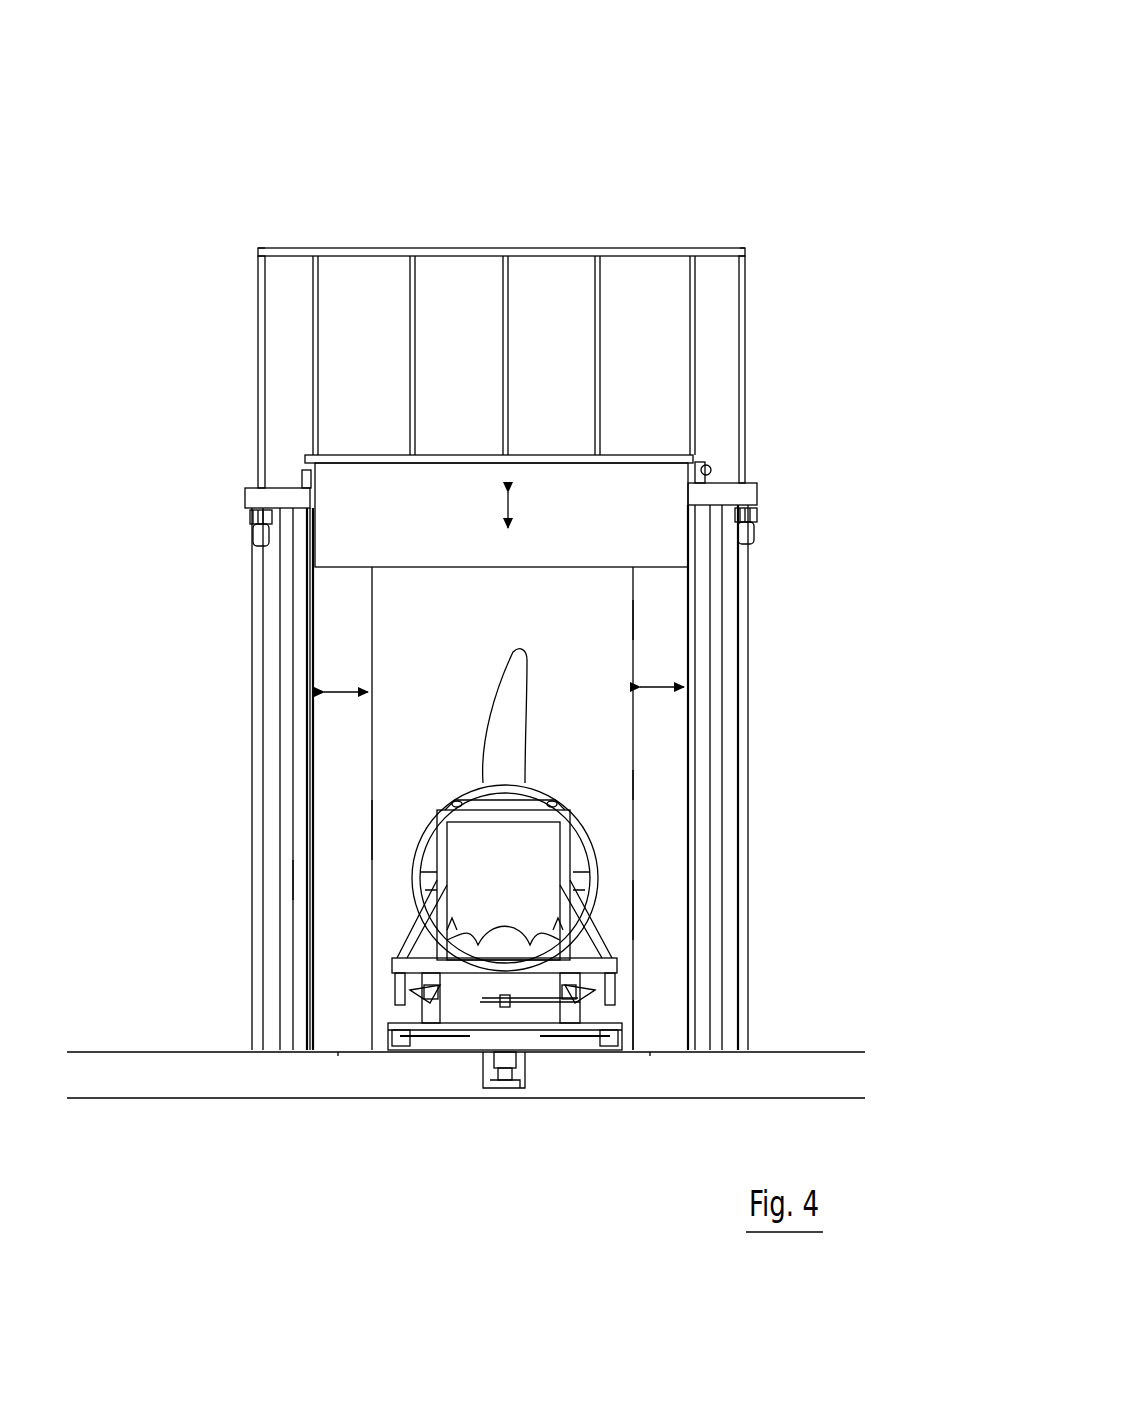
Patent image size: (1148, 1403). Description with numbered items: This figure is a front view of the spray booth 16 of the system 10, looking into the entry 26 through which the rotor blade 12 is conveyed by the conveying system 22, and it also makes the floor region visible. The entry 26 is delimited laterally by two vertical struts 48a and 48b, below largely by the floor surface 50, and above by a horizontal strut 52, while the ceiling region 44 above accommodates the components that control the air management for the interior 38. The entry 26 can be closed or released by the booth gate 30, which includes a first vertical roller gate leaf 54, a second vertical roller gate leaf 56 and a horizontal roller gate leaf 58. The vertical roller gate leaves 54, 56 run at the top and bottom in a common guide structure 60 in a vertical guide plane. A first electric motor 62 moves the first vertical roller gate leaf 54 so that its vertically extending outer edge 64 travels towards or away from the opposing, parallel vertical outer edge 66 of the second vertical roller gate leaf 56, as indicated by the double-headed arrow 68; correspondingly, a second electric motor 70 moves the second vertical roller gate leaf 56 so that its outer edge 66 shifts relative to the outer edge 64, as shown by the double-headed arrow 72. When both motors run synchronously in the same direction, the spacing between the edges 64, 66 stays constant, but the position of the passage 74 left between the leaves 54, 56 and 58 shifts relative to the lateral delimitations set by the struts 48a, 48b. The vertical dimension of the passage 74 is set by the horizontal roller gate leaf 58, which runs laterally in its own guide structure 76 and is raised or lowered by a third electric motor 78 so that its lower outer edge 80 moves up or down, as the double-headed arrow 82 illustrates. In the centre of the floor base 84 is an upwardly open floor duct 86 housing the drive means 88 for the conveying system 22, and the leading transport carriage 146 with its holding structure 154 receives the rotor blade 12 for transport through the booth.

The system 10 is at (705, 116).
The rotor blade 12 is at (650, 835).
The spray booth 16 is at (338, 200).
The conveying system 22 is at (566, 1064).
The entry 26 is at (608, 618).
The booth gate 30 is at (346, 598).
The interior 38 is at (487, 616).
The ceiling region 44 is at (565, 368).
The vertical strut 48a is at (300, 752).
The vertical strut 48b is at (703, 722).
The floor surface 50 is at (660, 1040).
The horizontal strut 52 is at (637, 455).
The first vertical roller gate leaf 54 is at (350, 880).
The second vertical roller gate leaf 56 is at (655, 918).
The horizontal roller gate leaf 58 is at (487, 500).
The guide structure 60 is at (338, 1060).
The first electric motor 62 is at (252, 530).
The outer edge 64 is at (375, 830).
The vertical outer edge 66 is at (628, 775).
The double-headed arrow 68 is at (372, 722).
The second electric motor 70 is at (756, 527).
The double-headed arrow 72 is at (662, 687).
The passage 74 is at (372, 660).
The guide structure 76 is at (311, 505).
The third electric motor 78 is at (710, 465).
The lower outer edge 80 is at (437, 570).
The double-headed arrow 82 is at (520, 512).
The floor base 84 is at (243, 1075).
The floor duct 86 is at (480, 1086).
The drive means 88 is at (520, 1078).
The leading transport carriage 146 is at (380, 952).
The holding structure 154 is at (576, 800).